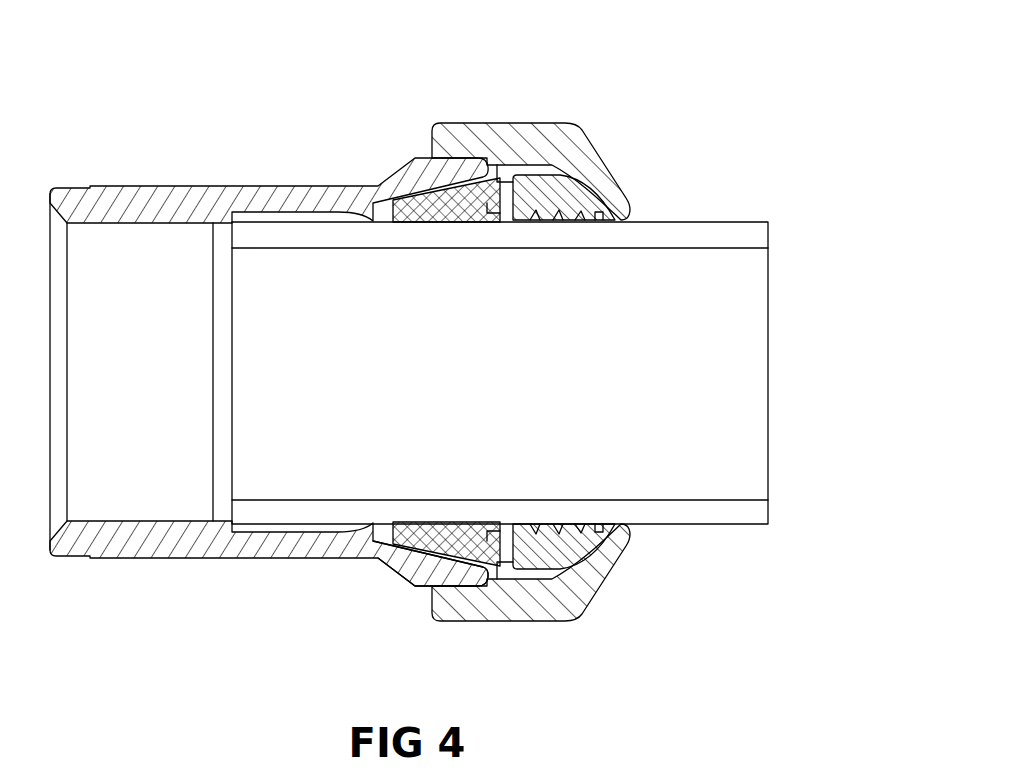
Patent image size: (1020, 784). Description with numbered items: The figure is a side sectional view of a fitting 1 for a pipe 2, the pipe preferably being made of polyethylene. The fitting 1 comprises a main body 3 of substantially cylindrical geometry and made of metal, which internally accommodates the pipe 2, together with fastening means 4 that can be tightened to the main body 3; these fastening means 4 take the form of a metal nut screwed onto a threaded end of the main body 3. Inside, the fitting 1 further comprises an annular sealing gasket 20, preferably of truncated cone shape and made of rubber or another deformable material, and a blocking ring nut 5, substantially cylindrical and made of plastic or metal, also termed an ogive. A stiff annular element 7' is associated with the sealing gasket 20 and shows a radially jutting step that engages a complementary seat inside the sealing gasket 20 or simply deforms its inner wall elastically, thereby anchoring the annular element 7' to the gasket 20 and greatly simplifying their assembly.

The fitting 1 is at (330, 108).
The pipe 2 is at (732, 488).
The main body 3 is at (149, 196).
The fastening means 4 is at (592, 170).
The blocking ring nut 5 is at (598, 578).
The annular element 7' is at (466, 447).
The annular sealing gasket 20 is at (376, 561).